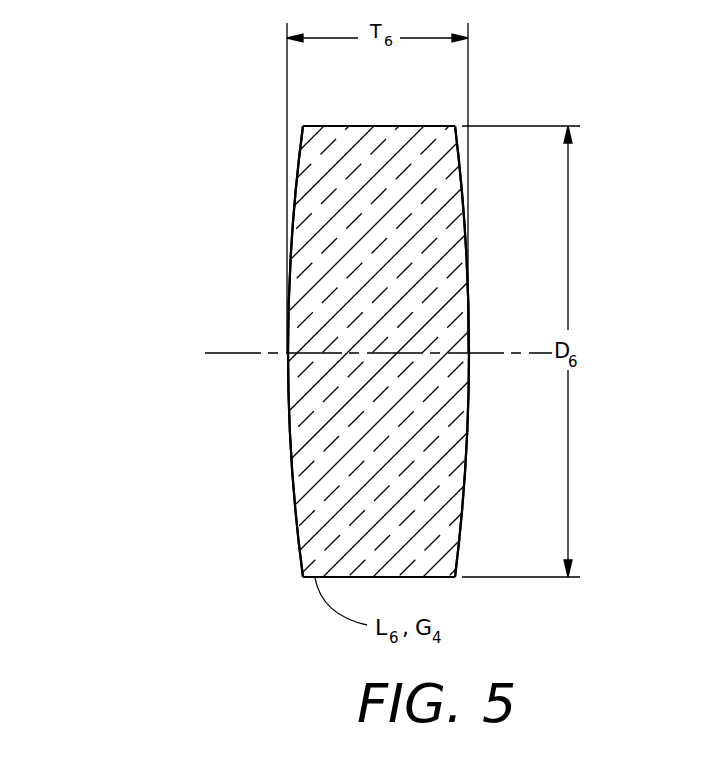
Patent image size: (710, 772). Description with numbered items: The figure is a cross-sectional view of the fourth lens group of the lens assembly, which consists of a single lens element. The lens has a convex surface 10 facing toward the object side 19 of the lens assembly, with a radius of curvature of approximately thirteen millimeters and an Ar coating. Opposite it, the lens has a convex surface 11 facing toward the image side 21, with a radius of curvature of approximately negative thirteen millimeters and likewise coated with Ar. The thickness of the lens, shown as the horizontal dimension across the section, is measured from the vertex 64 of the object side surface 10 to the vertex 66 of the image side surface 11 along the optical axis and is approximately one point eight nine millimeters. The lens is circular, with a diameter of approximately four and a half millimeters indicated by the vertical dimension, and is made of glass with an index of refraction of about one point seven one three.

The vertex of the object side surface 64 is at (288, 352).
The vertex of the image side surface 66 is at (469, 352).
The object side surface 10 is at (291, 453).
The image side surface 11 is at (466, 450).
The object side 19 is at (147, 199).
The image side 21 is at (651, 199).